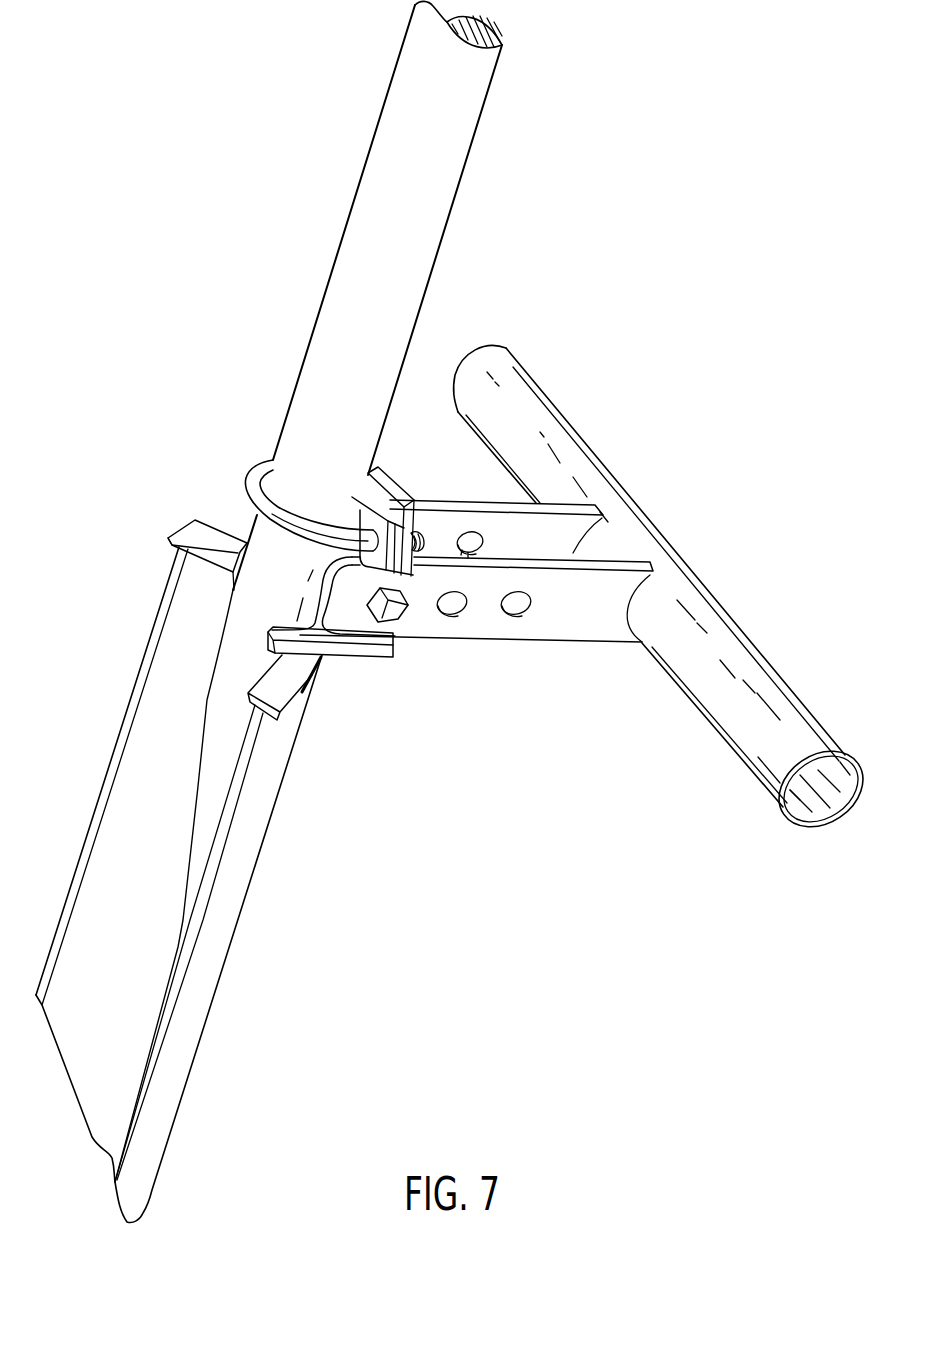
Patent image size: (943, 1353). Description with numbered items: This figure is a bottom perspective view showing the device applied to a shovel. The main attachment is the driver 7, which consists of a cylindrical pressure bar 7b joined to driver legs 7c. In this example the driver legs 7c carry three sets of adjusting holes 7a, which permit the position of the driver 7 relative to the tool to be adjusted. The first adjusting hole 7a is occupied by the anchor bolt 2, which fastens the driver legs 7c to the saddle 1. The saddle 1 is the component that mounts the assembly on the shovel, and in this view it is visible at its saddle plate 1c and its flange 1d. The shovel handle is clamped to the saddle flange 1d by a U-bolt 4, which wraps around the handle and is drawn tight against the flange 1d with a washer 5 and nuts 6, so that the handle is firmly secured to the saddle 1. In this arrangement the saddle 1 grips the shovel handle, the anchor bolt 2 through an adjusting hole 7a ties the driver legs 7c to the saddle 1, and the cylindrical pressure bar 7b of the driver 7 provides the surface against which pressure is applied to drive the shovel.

The saddle 1 is at (372, 662).
The saddle plate 1c is at (347, 657).
The saddle flange 1d is at (368, 471).
The anchor bolt 2 is at (396, 613).
The U-bolt 4 is at (254, 480).
The washer 5 is at (380, 478).
The nuts 6 is at (421, 532).
The driver 7 is at (545, 383).
The adjusting holes 7a is at (468, 532).
The cylindrical pressure bar 7b is at (657, 588).
The driver legs 7c is at (503, 508).